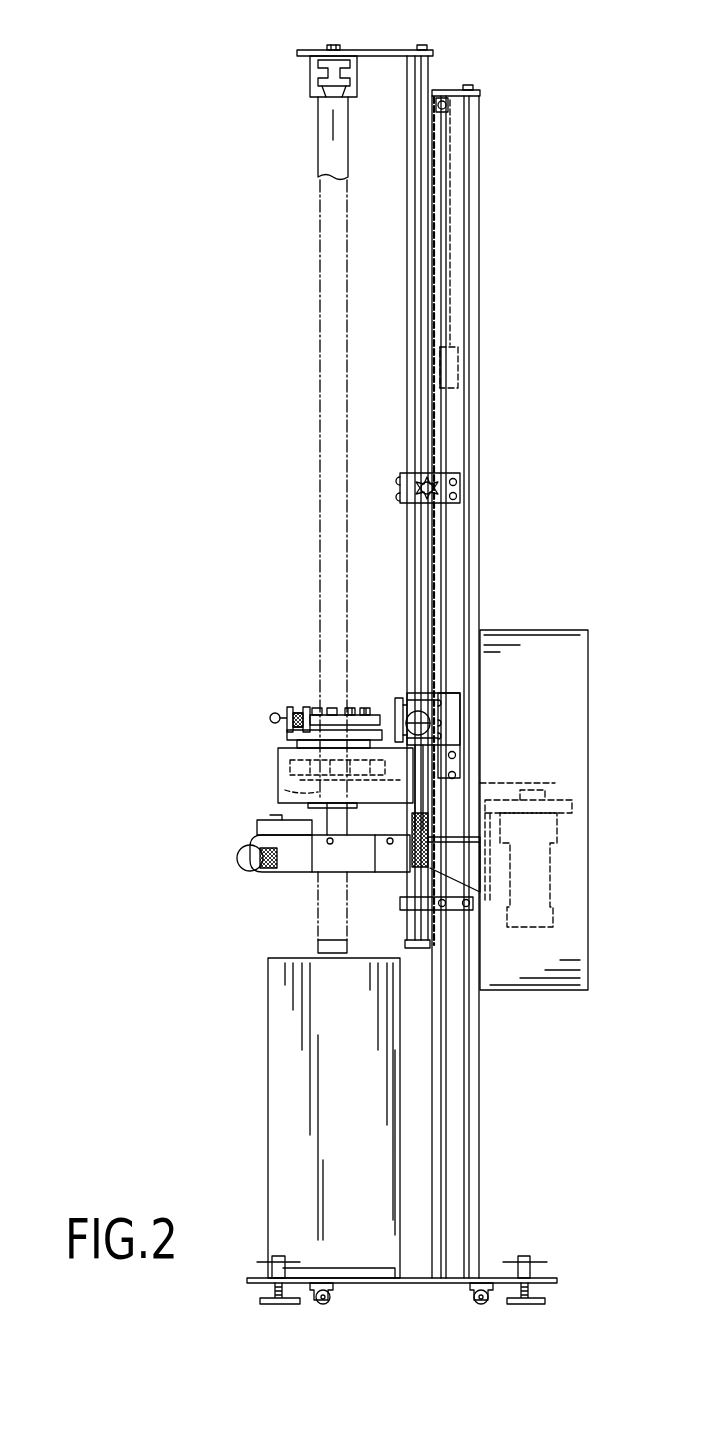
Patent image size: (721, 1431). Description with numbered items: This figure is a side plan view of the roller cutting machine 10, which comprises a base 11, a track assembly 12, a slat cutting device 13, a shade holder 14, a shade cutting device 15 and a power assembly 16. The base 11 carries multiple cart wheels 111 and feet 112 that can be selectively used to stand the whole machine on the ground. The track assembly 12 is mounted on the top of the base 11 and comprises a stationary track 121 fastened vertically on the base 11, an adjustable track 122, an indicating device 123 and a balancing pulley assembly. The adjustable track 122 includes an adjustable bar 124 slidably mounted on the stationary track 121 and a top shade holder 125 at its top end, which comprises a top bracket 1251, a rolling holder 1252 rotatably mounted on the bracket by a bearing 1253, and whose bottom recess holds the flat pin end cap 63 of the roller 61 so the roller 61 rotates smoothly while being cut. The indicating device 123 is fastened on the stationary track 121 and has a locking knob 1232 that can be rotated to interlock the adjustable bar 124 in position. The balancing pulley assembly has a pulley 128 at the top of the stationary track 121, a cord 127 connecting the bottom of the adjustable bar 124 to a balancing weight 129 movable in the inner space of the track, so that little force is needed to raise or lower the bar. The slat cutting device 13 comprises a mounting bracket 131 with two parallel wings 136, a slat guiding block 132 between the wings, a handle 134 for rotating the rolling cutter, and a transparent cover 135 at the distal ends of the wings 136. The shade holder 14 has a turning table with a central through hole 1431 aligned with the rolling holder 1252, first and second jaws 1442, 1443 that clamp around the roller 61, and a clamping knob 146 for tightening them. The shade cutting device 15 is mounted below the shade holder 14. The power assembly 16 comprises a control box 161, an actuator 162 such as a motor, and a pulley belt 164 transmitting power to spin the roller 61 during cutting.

The roller cutting machine 10 is at (547, 118).
The base 11 is at (397, 1283).
The cart wheels 111 is at (478, 1300).
The feet 112 is at (533, 1303).
The track assembly 12 is at (490, 318).
The stationary track 121 is at (474, 592).
The adjustable track 122 is at (398, 383).
The indicating device 123 is at (461, 468).
The locking knob 1232 is at (438, 497).
The adjustable bar 124 is at (414, 340).
The top shade holder 125 is at (291, 48).
The top bracket 1251 is at (358, 57).
The rolling holder 1252 is at (314, 80).
The bearing 1253 is at (320, 62).
The cord 127 is at (455, 243).
The pulley 128 is at (440, 100).
The balancing weight 129 is at (456, 370).
The slat cutting device 13 is at (453, 724).
The mounting bracket 131 is at (440, 747).
The slat guiding block 132 is at (412, 698).
The handle 134 is at (420, 777).
The transparent cover 135 is at (398, 698).
The wings 136 is at (412, 712).
The shade holder 14 is at (272, 748).
The central through hole 1431 is at (283, 790).
The first jaw 1442 is at (316, 710).
The second jaw 1443 is at (350, 710).
The clamping knob 146 is at (282, 718).
The shade cutting device 15 is at (276, 878).
The power assembly 16 is at (598, 898).
The control box 161 is at (567, 730).
The actuator 162 is at (540, 875).
The pulley belt 164 is at (555, 791).
The roller 61 is at (332, 267).
The flat pin end cap 63 is at (328, 86).